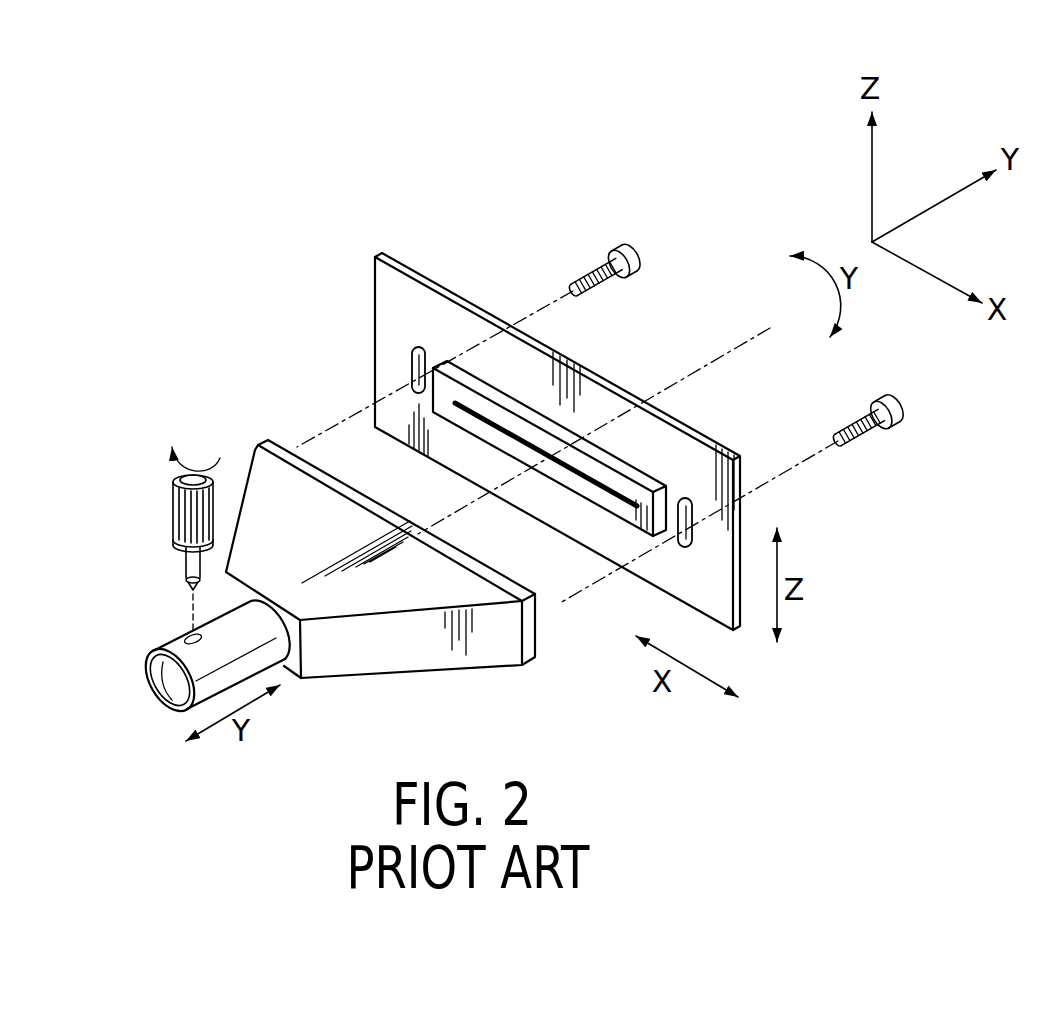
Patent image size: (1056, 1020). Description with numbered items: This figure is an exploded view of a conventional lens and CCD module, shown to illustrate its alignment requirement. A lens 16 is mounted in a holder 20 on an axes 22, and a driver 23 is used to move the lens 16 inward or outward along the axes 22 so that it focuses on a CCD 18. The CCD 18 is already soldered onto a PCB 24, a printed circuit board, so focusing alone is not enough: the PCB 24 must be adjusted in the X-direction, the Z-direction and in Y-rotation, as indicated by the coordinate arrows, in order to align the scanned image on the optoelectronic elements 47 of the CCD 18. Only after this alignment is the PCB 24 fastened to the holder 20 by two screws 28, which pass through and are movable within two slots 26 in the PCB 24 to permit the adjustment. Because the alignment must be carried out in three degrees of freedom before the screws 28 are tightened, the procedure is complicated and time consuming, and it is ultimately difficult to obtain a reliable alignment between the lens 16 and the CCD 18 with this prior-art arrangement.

The lens 16 is at (152, 668).
The CCD 18 is at (490, 412).
The holder 20 is at (407, 660).
The axes 22 is at (683, 376).
The driver 23 is at (172, 523).
The PCB 24 is at (445, 305).
The slots 26 is at (412, 372).
The screws 28 is at (855, 421).
The optoelectronic elements 47 is at (600, 492).